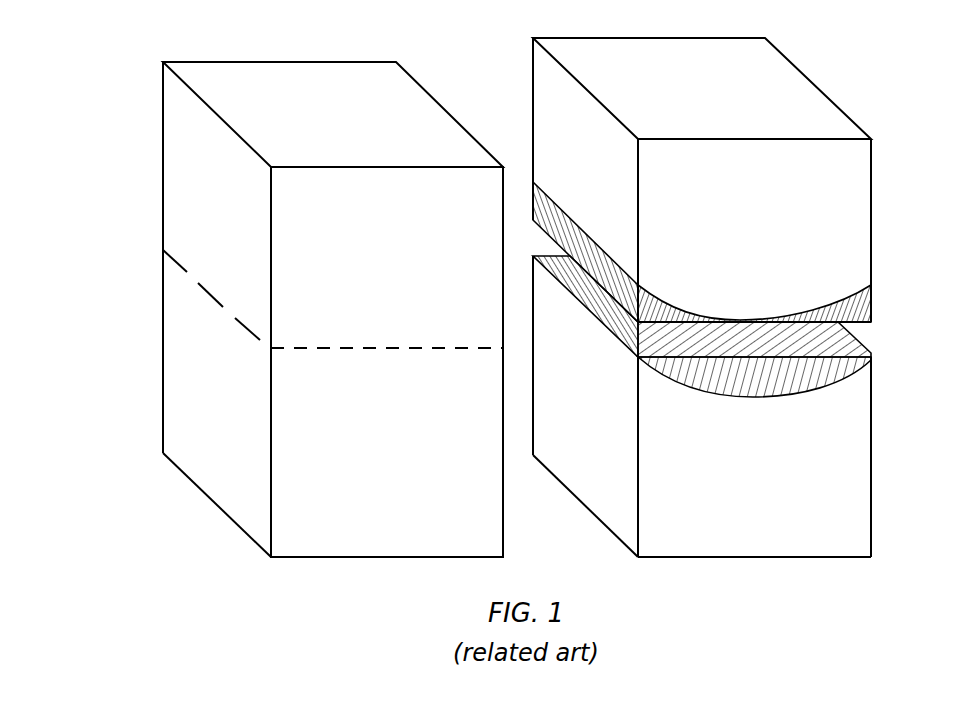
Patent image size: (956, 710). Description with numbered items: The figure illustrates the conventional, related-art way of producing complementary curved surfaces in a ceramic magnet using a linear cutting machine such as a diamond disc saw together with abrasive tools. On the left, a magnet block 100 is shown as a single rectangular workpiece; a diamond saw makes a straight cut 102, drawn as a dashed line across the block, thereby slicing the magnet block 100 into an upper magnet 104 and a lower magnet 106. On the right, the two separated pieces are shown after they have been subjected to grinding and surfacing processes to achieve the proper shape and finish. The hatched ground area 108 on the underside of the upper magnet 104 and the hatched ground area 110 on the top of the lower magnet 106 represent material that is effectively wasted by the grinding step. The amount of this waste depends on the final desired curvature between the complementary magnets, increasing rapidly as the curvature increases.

The magnet block 100 is at (104, 112).
The cut 102 is at (257, 316).
The upper magnet 104 is at (709, 250).
The lower magnet 106 is at (716, 503).
The ground area 108 is at (825, 282).
The ground area 110 is at (801, 416).